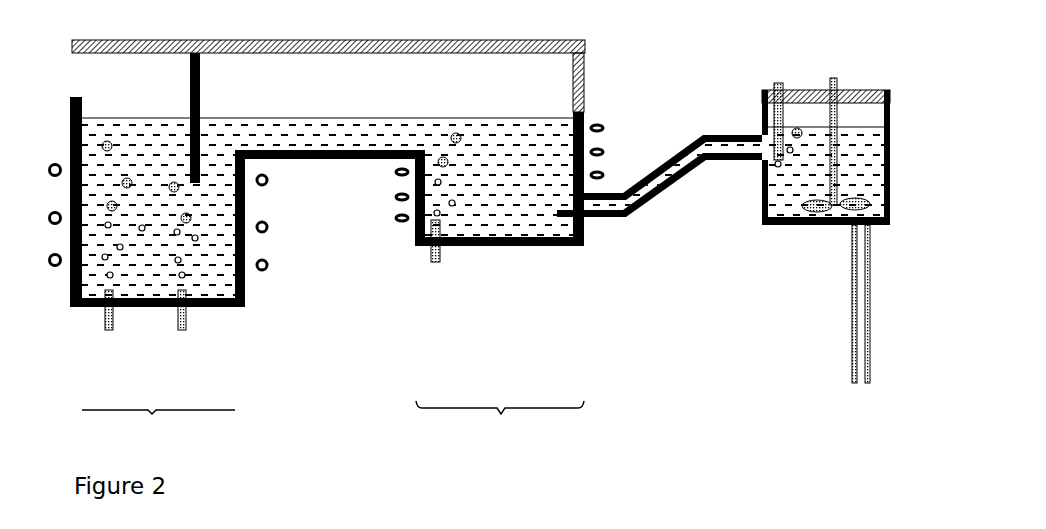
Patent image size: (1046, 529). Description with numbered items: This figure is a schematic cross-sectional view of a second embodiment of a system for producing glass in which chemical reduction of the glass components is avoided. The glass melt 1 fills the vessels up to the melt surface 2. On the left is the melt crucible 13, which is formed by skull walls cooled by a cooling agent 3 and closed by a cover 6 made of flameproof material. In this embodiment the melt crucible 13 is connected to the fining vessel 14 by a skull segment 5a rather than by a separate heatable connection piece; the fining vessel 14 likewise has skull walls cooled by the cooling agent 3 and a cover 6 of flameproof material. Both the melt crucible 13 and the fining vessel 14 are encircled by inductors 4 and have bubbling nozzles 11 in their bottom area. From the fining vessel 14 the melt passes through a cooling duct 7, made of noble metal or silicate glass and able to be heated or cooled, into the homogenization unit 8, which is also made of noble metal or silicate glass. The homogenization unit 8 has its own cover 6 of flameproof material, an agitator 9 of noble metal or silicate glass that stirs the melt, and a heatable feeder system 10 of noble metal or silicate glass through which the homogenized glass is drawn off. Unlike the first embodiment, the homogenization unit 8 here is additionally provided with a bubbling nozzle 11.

The glass melt 1 is at (193, 270).
The melt surface 2 is at (142, 117).
The skull walls cooled by cooling agent 3 is at (81, 117).
The inductor 4 is at (397, 218).
The skull connection element 5a is at (290, 158).
The cover made of flameproof material 6 is at (400, 57).
The cooling duct made of noble metal or silicate glass 7 is at (648, 185).
The homogenization unit made of noble metal or silicate glass 8 is at (762, 119).
The agitator made of noble metal or silicate glass 9 is at (810, 197).
The heatable feeder system made of noble metal or silicate glass 10 is at (848, 297).
The bubbling nozzles 11 is at (115, 307).
The melt crucible 13 is at (158, 426).
The fining vessel 14 is at (500, 422).